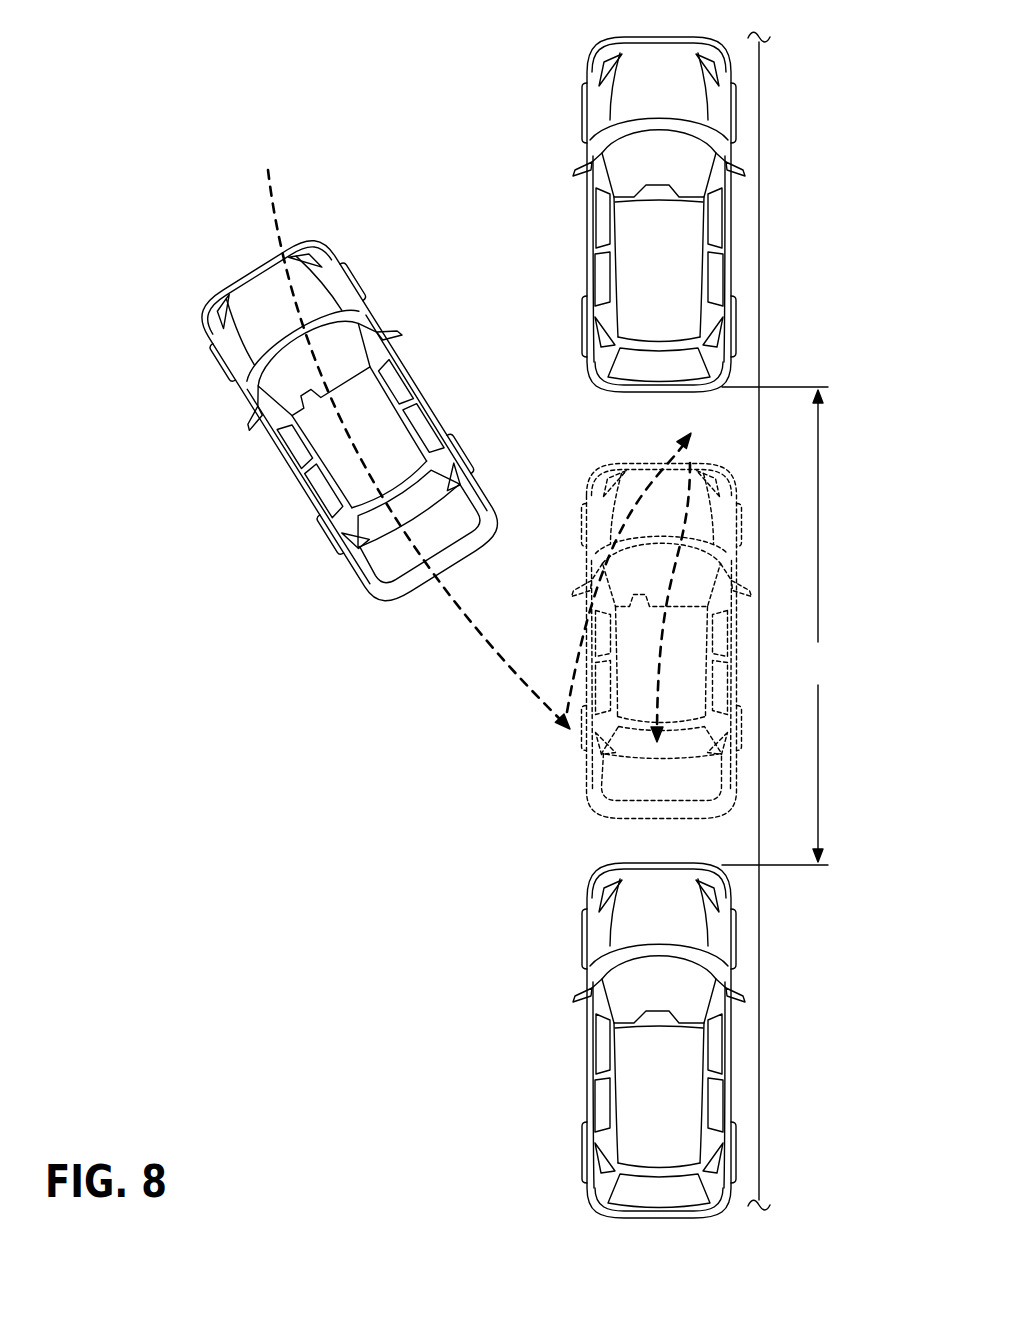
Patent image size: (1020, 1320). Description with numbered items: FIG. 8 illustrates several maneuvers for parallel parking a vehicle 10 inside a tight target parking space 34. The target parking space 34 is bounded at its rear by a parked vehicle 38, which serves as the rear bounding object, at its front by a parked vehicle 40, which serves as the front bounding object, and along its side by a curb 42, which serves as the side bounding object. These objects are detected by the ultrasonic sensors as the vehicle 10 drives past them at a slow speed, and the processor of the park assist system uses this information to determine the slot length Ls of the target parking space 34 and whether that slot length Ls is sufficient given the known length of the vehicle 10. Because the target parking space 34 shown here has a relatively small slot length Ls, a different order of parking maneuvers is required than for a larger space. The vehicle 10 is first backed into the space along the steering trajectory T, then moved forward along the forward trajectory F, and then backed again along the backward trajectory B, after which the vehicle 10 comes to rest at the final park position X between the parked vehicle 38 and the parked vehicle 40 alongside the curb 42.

The vehicle 10 is at (250, 412).
The target parking space 34 is at (745, 577).
The parked vehicle 38 is at (588, 1032).
The parked vehicle 40 is at (589, 232).
The curb 42 is at (760, 495).
The slot length Ls is at (822, 626).
The steering trajectory T is at (468, 628).
The forward trajectory F is at (633, 460).
The backward trajectory B is at (590, 783).
The final park position X is at (580, 547).